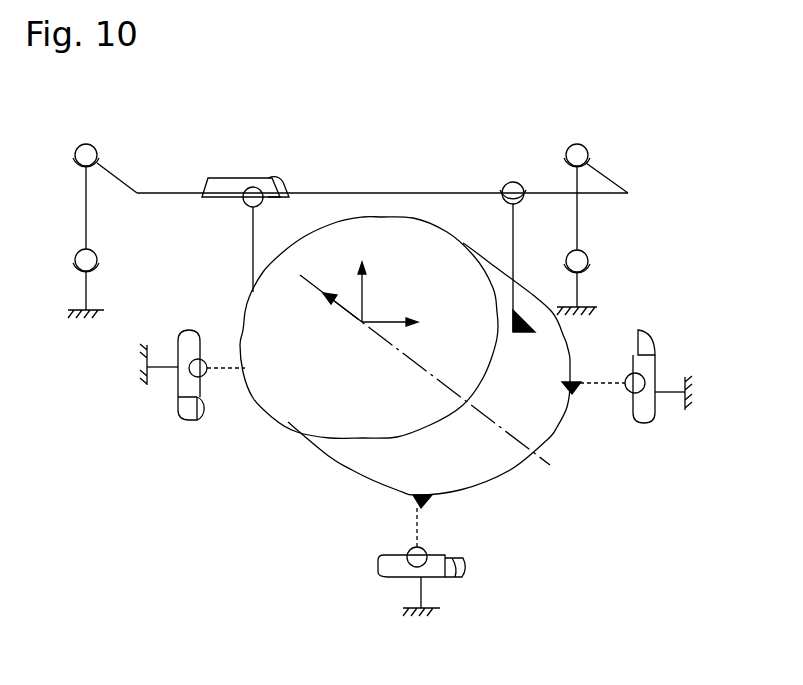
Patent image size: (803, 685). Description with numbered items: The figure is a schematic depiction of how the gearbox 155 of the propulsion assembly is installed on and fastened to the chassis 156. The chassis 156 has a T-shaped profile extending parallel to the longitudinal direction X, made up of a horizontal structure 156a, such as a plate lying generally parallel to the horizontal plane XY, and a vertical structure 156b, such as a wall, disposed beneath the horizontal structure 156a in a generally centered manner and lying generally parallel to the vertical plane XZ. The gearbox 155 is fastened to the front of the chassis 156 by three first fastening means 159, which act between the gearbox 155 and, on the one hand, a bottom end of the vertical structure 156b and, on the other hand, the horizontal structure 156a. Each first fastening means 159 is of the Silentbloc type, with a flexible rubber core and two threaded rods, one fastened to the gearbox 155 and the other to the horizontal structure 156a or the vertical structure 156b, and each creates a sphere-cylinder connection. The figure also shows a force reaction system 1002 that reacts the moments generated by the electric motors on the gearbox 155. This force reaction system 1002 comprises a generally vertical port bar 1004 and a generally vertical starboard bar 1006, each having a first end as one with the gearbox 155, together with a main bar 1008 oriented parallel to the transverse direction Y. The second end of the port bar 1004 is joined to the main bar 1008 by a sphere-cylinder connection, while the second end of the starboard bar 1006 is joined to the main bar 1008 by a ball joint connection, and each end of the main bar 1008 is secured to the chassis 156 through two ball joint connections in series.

The force reaction system 1002 is at (580, 112).
The port bar 1004 is at (503, 223).
The starboard bar 1006 is at (250, 248).
The main bar 1008 is at (358, 192).
The gearbox 155 is at (317, 410).
The chassis 156 is at (75, 312).
The horizontal structure 156a is at (142, 367).
The vertical structure 156b is at (440, 613).
The first fastening means 159 is at (183, 385).